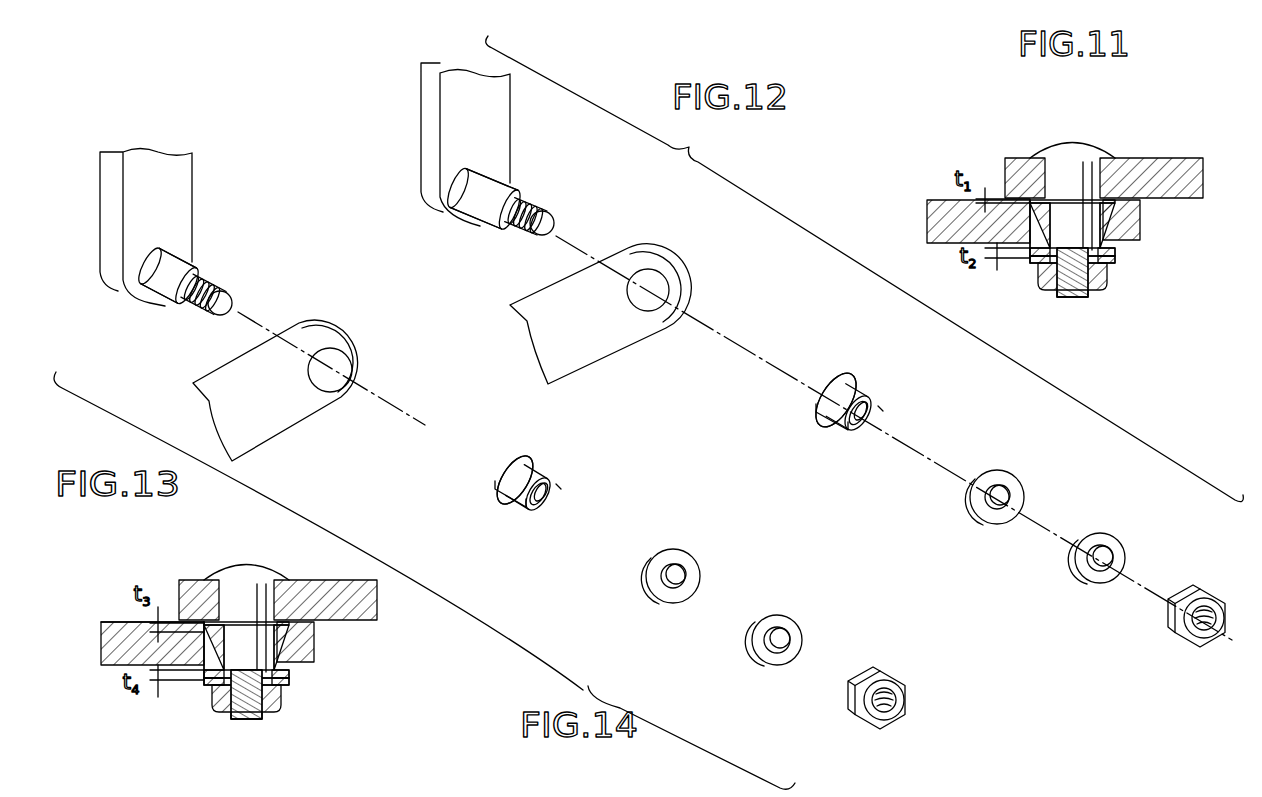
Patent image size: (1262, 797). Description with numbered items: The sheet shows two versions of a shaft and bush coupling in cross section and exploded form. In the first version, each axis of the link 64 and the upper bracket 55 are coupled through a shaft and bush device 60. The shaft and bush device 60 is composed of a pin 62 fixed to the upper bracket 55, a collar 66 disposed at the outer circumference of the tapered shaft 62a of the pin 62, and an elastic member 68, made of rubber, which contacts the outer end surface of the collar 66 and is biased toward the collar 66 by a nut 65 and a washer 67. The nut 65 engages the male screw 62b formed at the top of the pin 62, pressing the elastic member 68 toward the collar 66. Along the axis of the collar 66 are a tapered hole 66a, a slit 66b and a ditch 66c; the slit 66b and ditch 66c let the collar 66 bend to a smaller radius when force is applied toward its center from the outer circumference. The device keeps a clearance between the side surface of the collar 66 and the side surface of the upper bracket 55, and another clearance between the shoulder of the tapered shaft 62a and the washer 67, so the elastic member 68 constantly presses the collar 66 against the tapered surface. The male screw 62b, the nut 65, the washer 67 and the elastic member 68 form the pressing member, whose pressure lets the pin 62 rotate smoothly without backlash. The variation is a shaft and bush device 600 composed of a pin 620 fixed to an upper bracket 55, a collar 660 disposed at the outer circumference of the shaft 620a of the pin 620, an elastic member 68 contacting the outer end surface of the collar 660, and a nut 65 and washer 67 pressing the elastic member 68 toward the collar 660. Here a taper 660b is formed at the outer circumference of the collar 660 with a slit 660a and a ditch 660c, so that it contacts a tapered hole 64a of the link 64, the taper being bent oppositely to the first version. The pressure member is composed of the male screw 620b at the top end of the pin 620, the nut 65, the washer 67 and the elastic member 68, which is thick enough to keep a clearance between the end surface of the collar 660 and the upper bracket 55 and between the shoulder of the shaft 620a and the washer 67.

In FIG. 11, the upper bracket 55 is at (1162, 163).
In FIG. 13, the upper bracket 55 is at (313, 587).
In FIG. 14, the upper bracket 55 is at (173, 198).
In FIG. 12, the upper bracket 55 is at (503, 112).
In FIG. 11, the shaft and bush device 60 is at (1028, 268).
In FIG. 12, the shaft and bush device 60 is at (912, 395).
In FIG. 11, the pin 62 is at (1062, 172).
In FIG. 12, the pin 62 is at (510, 187).
In FIG. 11, the tapered shaft 62a is at (1093, 219).
In FIG. 12, the tapered shaft 62a is at (477, 205).
In FIG. 11, the male screw 62b is at (1077, 298).
In FIG. 12, the male screw 62b is at (533, 203).
In FIG. 11, the link 64 is at (942, 207).
In FIG. 13, the link 64 is at (122, 630).
In FIG. 14, the link 64 is at (277, 415).
In FIG. 12, the link 64 is at (543, 339).
In FIG. 13, the tapered hole 64a is at (208, 654).
In FIG. 14, the tapered hole 64a is at (340, 360).
In FIG. 11, the nut 65 is at (1100, 290).
In FIG. 13, the nut 65 is at (274, 712).
In FIG. 12, the nut 65 is at (884, 662).
In FIG. 11, the collar 66 is at (1108, 233).
In FIG. 12, the collar 66 is at (828, 377).
In FIG. 11, the tapered hole 66a is at (1047, 223).
In FIG. 12, the tapered hole 66a is at (862, 395).
In FIG. 12, the slit 66b is at (826, 425).
In FIG. 12, the ditch 66c is at (858, 440).
In FIG. 11, the washer 67 is at (1110, 263).
In FIG. 13, the washer 67 is at (288, 685).
In FIG. 12, the washer 67 is at (777, 608).
In FIG. 11, the elastic member 68 is at (1120, 252).
In FIG. 13, the elastic member 68 is at (293, 672).
In FIG. 12, the elastic member 68 is at (685, 547).
In FIG. 13, the shaft and bush device 600 is at (192, 700).
In FIG. 12, the shaft and bush device 600 is at (647, 497).
In FIG. 13, the pin 620 is at (240, 602).
In FIG. 14, the pin 620 is at (192, 263).
In FIG. 13, the shaft 620a is at (283, 648).
In FIG. 14, the shaft 620a is at (147, 282).
In FIG. 13, the male screw 620b is at (243, 721).
In FIG. 14, the male screw 620b is at (215, 287).
In FIG. 13, the collar 660 is at (292, 673).
In FIG. 12, the collar 660 is at (505, 458).
In FIG. 12, the slit 660a is at (510, 500).
In FIG. 13, the taper 660b is at (290, 657).
In FIG. 12, the taper 660b is at (538, 462).
In FIG. 12, the ditch 660c is at (561, 486).